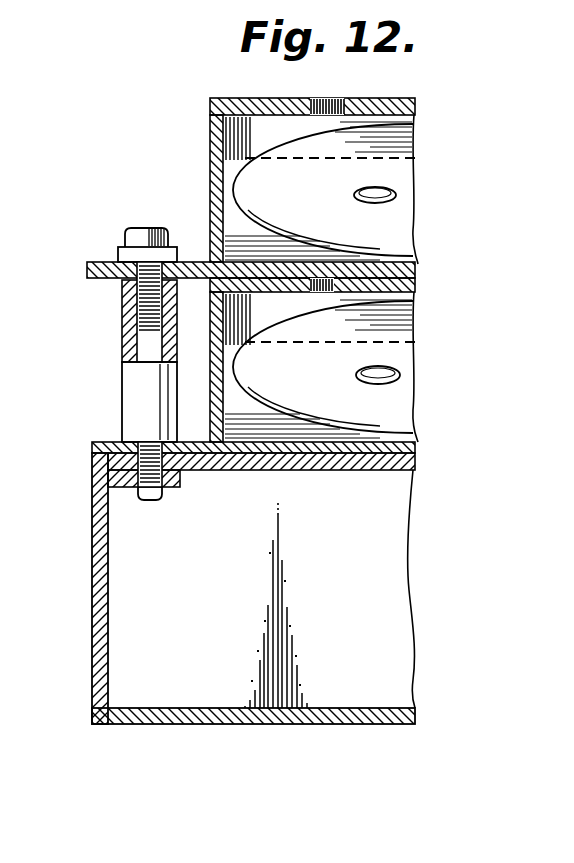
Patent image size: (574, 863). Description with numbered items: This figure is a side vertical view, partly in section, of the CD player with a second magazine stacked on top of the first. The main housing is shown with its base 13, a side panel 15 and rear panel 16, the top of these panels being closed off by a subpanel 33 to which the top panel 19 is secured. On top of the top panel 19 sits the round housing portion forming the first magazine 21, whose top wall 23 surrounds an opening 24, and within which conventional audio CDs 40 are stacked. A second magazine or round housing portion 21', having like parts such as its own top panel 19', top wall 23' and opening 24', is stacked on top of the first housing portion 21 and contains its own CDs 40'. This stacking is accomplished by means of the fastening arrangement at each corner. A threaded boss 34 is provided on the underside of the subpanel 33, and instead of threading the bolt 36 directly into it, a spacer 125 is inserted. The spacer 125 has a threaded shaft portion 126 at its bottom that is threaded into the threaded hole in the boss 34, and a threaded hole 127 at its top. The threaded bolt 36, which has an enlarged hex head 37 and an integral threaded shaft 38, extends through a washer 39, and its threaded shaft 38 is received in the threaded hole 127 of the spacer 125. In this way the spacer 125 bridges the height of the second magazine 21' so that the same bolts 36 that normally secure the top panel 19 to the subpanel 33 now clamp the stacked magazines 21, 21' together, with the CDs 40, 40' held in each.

The base 13 is at (377, 717).
The side panel 15 is at (249, 620).
The rear panel 16 is at (97, 677).
The top panel 19 is at (280, 487).
The top panel 19' is at (275, 239).
The magazine 21 is at (312, 406).
The second magazine 21' is at (179, 162).
The top wall 23 is at (323, 193).
The top wall 23' is at (301, 57).
The opening 24 is at (302, 335).
The opening 24' is at (347, 86).
The subpanel 33 is at (338, 472).
The threaded boss 34 is at (123, 486).
The threaded bolt 36 is at (109, 358).
The hex head 37 is at (155, 226).
The threaded shaft 38 is at (123, 283).
The washer 39 is at (120, 246).
The audio CD 40 is at (408, 391).
The audio CD 40' is at (409, 134).
The spacer 125 is at (145, 408).
The threaded shaft portion 126 is at (152, 503).
The threaded hole 127 is at (127, 318).